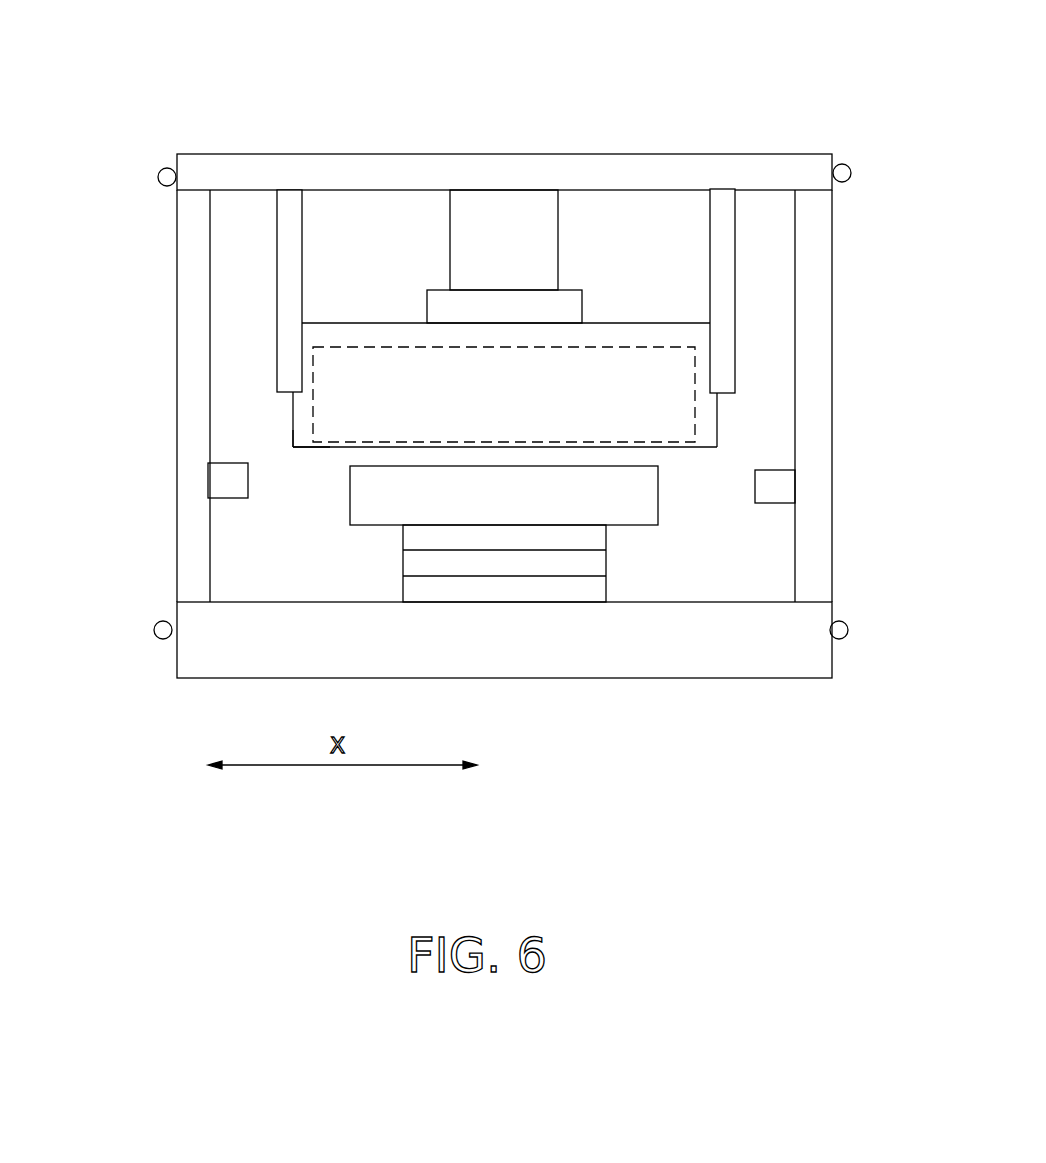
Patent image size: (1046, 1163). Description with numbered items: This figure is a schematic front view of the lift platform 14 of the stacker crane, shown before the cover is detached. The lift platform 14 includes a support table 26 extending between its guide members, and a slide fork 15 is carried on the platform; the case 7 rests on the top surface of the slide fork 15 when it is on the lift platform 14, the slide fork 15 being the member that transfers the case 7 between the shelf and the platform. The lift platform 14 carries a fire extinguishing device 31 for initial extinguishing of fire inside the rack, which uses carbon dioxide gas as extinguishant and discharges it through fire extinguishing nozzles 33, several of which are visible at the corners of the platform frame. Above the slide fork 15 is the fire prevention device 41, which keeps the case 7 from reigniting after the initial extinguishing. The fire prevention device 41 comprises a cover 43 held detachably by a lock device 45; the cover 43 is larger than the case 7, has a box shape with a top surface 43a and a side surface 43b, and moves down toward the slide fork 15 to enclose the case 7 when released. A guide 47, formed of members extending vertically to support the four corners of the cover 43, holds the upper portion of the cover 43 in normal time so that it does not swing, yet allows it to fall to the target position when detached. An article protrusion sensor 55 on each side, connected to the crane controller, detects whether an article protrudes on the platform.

The lift platform 14 is at (530, 118).
The fire extinguishing device 31 is at (859, 124).
The fire extinguishing nozzle 33 is at (158, 176).
The fire prevention device 41 is at (393, 243).
The lock device 45 is at (594, 261).
The cover 43 is at (632, 305).
The top surface 43a is at (383, 343).
The side surface 43b is at (297, 428).
The guide 47 is at (298, 313).
The article protrusion sensor 55 is at (220, 487).
The case 7 is at (617, 512).
The slide fork 15 is at (641, 558).
The support table 26 is at (535, 644).